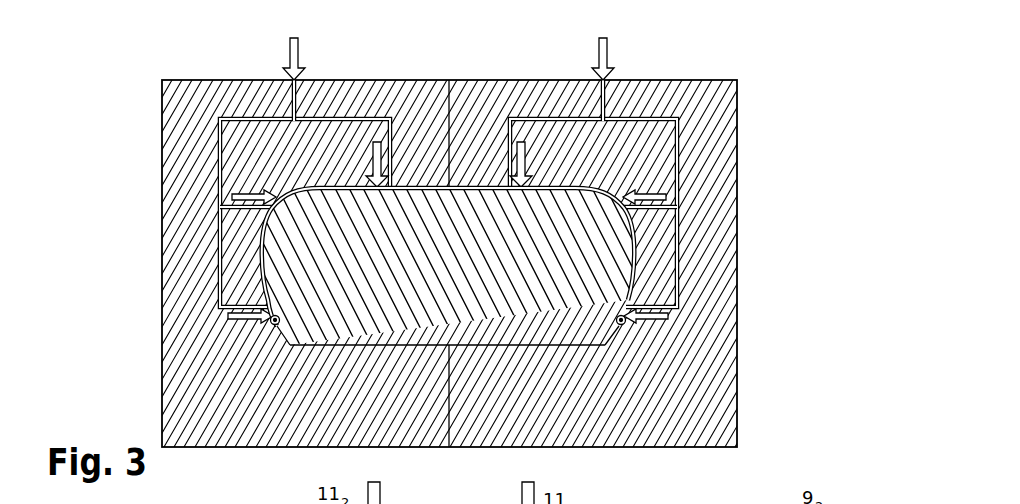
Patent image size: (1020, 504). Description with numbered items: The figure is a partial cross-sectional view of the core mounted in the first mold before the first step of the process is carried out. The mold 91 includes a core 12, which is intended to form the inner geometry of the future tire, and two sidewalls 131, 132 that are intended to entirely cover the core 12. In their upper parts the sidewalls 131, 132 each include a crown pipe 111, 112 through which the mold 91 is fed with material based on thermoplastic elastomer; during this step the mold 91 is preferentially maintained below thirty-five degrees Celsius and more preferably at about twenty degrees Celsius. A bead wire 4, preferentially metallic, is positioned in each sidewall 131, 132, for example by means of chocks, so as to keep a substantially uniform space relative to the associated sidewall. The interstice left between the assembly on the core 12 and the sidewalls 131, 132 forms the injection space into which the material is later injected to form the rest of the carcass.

The mold 91 is at (790, 105).
The sidewall 131 is at (710, 170).
The sidewall 132 is at (197, 164).
The crown pipe 111 is at (605, 102).
The crown pipe 112 is at (293, 103).
The core 12 is at (552, 325).
The bead wire 4 is at (276, 325).